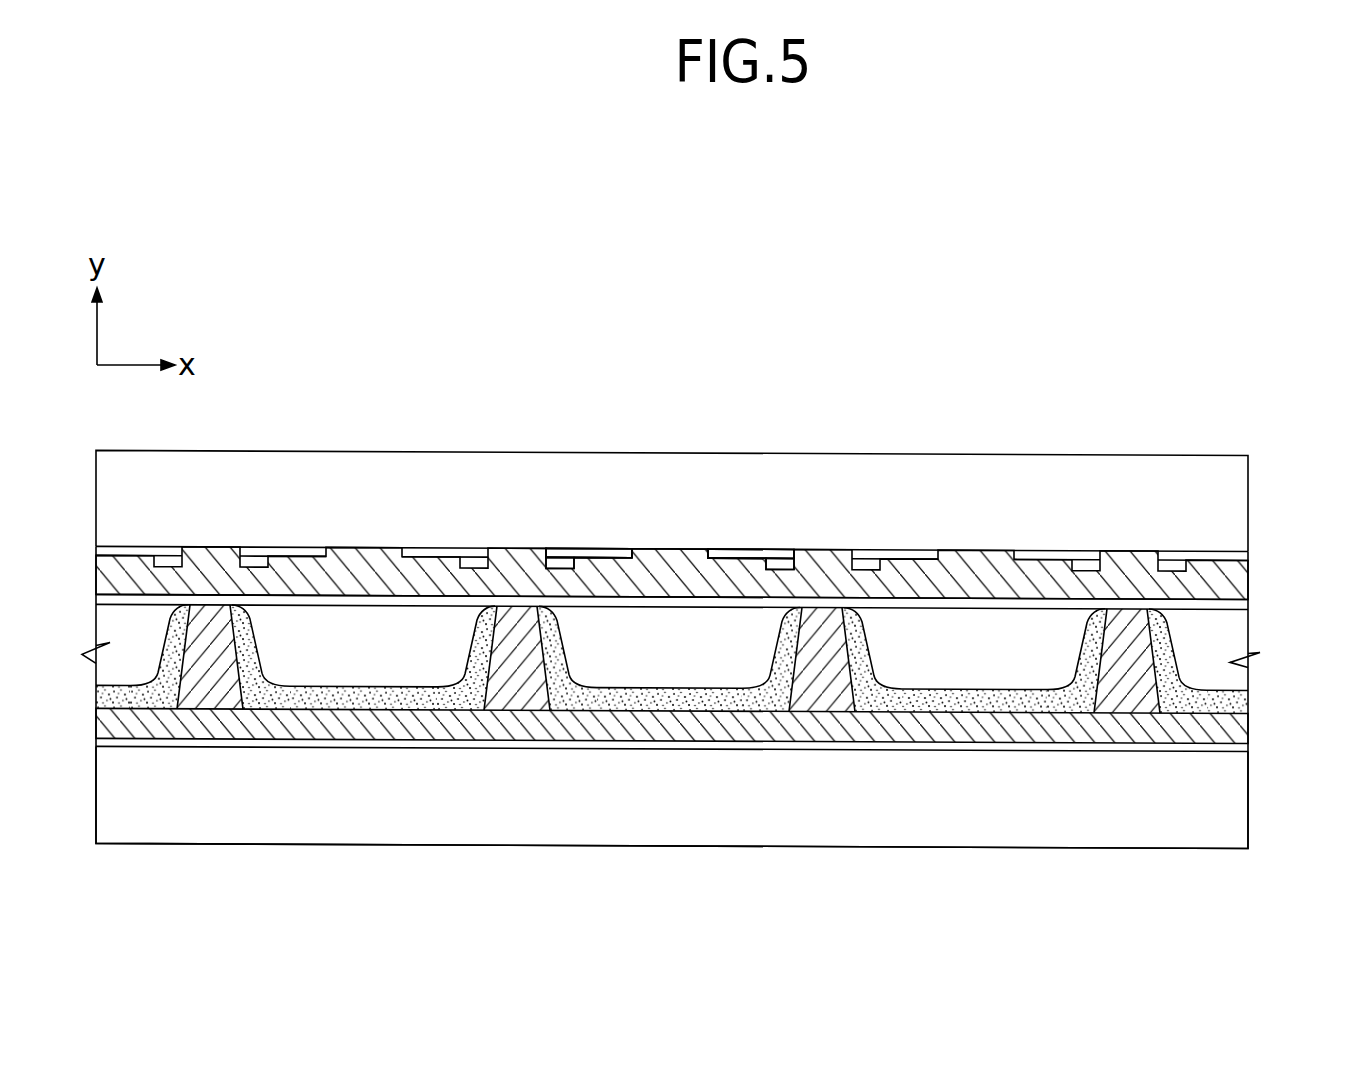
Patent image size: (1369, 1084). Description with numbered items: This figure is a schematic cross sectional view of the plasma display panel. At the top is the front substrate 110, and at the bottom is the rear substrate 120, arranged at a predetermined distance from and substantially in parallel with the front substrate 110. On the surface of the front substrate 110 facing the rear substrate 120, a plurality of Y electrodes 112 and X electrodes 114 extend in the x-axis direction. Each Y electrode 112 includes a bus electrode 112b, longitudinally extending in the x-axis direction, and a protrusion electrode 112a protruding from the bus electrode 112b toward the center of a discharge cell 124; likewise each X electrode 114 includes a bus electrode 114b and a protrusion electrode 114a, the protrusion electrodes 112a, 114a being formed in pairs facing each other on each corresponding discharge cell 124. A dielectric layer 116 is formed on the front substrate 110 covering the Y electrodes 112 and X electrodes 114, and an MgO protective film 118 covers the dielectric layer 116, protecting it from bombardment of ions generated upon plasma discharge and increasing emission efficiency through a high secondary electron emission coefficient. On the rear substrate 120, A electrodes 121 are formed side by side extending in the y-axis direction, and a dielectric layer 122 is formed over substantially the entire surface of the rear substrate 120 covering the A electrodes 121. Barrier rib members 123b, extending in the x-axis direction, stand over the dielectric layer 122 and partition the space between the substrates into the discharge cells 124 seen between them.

The front substrate 110 is at (1220, 488).
The Y electrode 112 is at (535, 391).
The protrusion electrode 112a is at (596, 550).
The bus electrode 112b is at (558, 562).
The X electrode 114 is at (730, 390).
The protrusion electrode 114a is at (746, 550).
The bus electrode 114b is at (790, 561).
The dielectric layer 116 is at (1223, 568).
The MgO protective film 118 is at (1223, 600).
The rear substrate 120 is at (822, 820).
The A electrode 121 is at (752, 742).
The dielectric layer 122 is at (675, 719).
The barrier rib member 123b is at (208, 686).
The discharge cell 124 is at (998, 659).